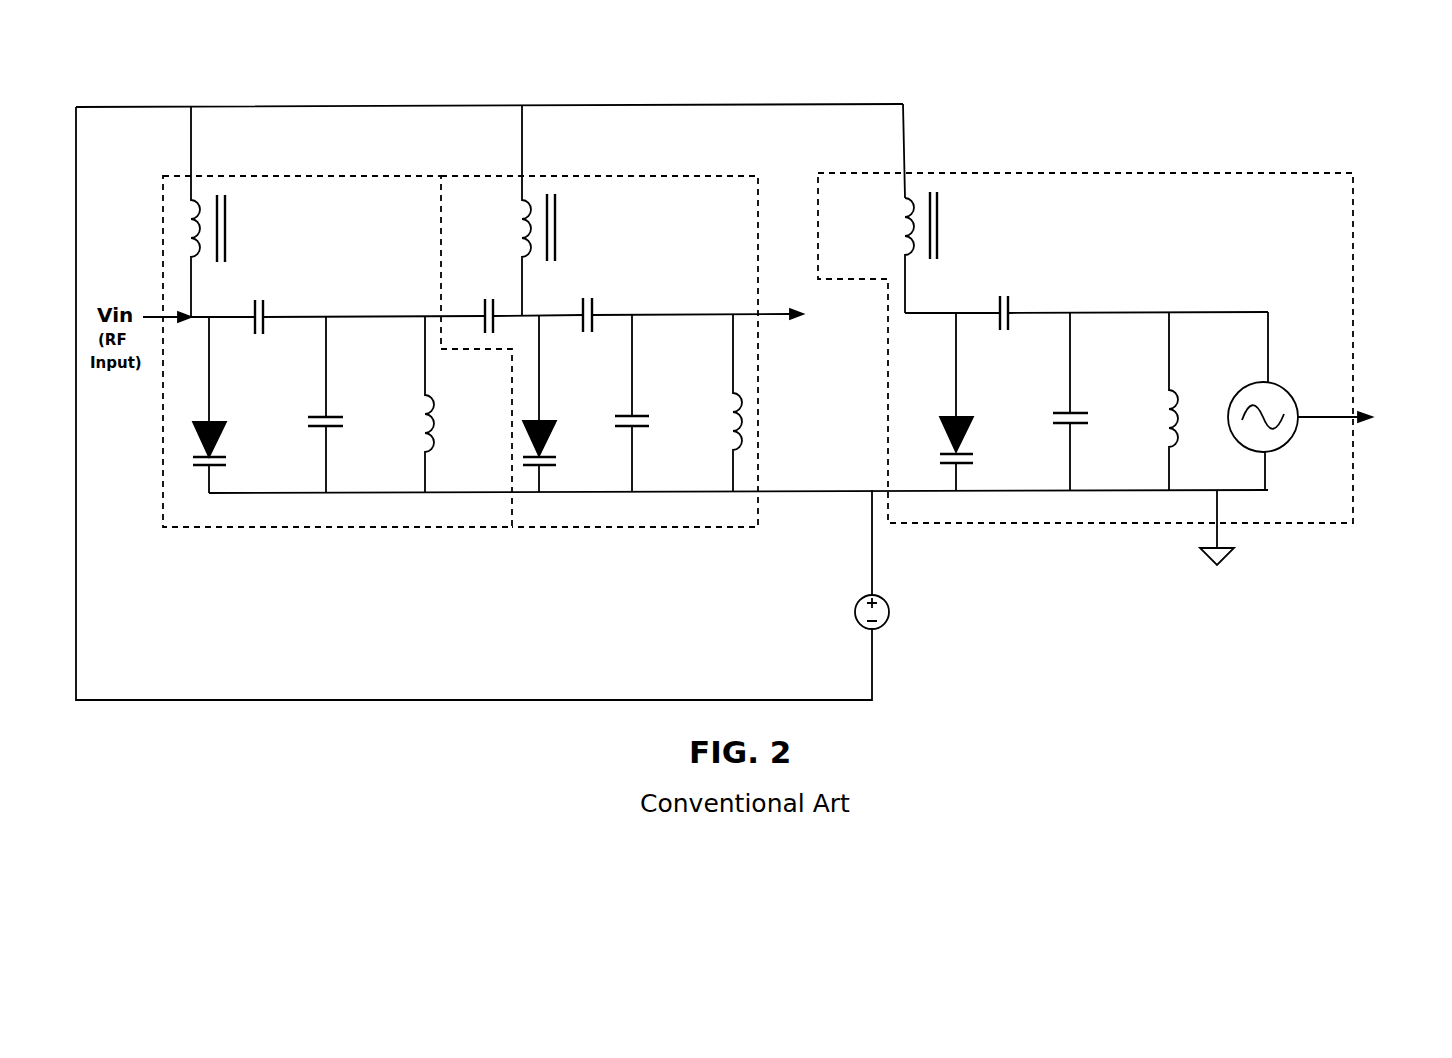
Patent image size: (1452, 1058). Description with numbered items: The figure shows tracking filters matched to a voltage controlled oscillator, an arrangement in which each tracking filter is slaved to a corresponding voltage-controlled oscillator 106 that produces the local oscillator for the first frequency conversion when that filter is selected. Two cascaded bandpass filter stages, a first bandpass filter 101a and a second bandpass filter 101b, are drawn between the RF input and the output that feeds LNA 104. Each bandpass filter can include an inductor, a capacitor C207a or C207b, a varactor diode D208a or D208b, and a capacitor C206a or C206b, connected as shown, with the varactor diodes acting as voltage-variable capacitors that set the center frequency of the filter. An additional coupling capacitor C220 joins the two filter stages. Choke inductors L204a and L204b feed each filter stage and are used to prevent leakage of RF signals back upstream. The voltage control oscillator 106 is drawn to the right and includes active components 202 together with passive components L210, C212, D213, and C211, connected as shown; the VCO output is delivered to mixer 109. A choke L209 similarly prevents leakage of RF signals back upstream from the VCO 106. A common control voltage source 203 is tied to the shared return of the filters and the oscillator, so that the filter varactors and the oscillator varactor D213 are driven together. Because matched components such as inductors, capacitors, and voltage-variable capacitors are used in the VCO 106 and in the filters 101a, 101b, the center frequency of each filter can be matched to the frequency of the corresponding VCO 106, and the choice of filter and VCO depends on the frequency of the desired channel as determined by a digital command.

The bandpass filter 101a is at (390, 527).
The bandpass filter 101b is at (667, 527).
The voltage-controlled oscillator 106 is at (1108, 174).
The choke inductor L204a is at (247, 212).
The choke inductor L204b is at (577, 210).
The capacitor C206a is at (259, 304).
The capacitor C206b is at (604, 303).
The inter-stage coupling capacitor C220 is at (482, 303).
The varactor diode D208a is at (245, 405).
The varactor diode D208b is at (575, 404).
The capacitor C207a is at (355, 405).
The capacitor C207b is at (661, 403).
The choke L209 is at (887, 252).
The capacitor C211 is at (1002, 300).
The varactor diode D213 is at (985, 401).
The capacitor C212 is at (1042, 401).
The inductor L210 is at (1145, 401).
The active components 202 is at (1313, 363).
The control voltage source (Vcontrol) 203 is at (880, 630).
The LNA (output destination) 104 is at (822, 326).
The mixer (VCO output destination) 109 is at (1365, 435).